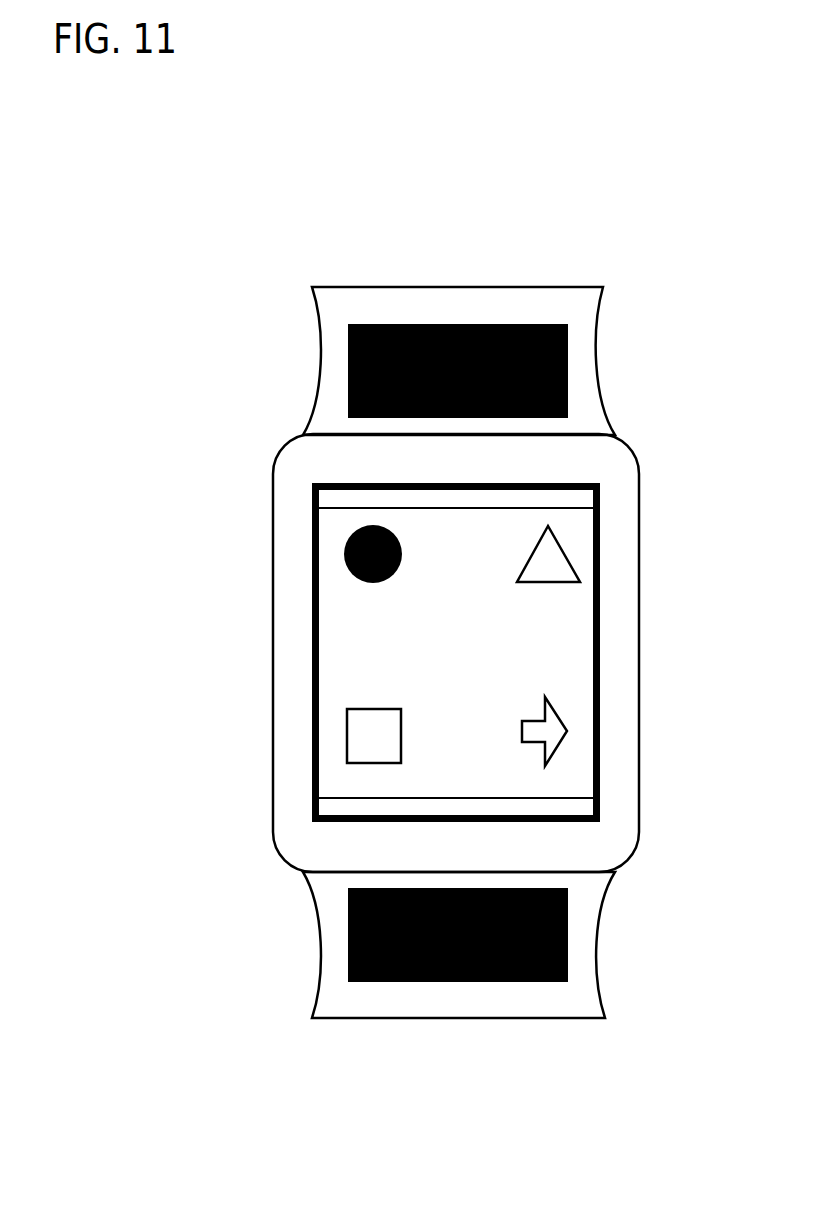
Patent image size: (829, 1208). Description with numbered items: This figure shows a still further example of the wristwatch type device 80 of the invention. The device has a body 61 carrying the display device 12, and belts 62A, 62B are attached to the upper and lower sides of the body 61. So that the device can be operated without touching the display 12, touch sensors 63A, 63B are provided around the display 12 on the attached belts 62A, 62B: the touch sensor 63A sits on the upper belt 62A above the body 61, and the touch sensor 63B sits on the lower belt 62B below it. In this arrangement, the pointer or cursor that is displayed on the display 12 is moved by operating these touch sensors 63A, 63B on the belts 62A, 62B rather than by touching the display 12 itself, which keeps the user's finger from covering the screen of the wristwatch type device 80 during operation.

The wearable electronic device 80 is at (252, 631).
The body 61 is at (639, 653).
The belt 62A is at (360, 287).
The belt 62B is at (408, 1018).
The touch sensor 63A is at (348, 343).
The touch sensor 63B is at (348, 932).
The display device 12 is at (343, 688).